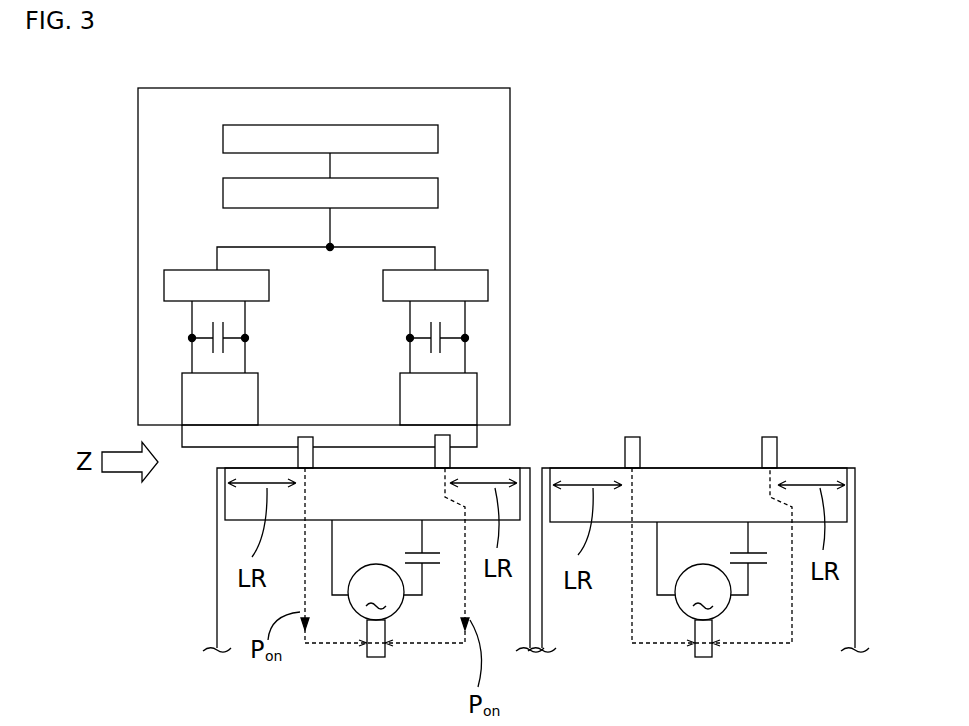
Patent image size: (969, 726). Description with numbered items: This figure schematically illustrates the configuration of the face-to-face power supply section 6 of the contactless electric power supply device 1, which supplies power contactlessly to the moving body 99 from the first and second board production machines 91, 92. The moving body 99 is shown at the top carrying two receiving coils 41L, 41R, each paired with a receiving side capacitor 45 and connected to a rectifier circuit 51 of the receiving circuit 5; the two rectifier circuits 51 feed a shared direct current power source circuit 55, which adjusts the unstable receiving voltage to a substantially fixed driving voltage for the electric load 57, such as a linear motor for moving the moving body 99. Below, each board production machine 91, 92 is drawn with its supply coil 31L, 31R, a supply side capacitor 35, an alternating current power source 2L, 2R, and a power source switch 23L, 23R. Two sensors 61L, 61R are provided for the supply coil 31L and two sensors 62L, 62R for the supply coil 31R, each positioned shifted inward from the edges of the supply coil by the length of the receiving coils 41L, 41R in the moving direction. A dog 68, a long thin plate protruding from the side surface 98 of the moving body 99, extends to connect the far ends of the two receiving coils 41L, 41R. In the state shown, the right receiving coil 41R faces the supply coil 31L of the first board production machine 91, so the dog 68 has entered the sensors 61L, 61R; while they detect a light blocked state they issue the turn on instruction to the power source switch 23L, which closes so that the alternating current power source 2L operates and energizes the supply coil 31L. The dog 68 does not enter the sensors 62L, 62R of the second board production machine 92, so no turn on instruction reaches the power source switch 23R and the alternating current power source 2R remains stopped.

The contactless electric power supply device 1 is at (563, 230).
The receiving circuit 5 is at (193, 225).
The face-to-face power supply section 6 is at (200, 460).
The moving body 99 is at (153, 123).
The electric load 57 is at (345, 153).
The direct current power source circuit 55 is at (345, 206).
The rectifier circuit 51 is at (232, 299).
The receiving side capacitor 45 is at (213, 321).
The left receiving coil 41L is at (240, 412).
The right receiving coil 41R is at (462, 412).
The side surface 98 is at (178, 426).
The dog 68 is at (205, 452).
The sensor 61L is at (297, 454).
The sensor 61R is at (450, 452).
The sensor 62L is at (640, 452).
The sensor 62R is at (777, 452).
The supply coil 31L is at (398, 512).
The supply coil 31R is at (737, 512).
The first board production machine 91 is at (548, 621).
The second board production machine 92 is at (734, 622).
The alternating current power source 2L is at (355, 613).
The alternating current power source 2R is at (683, 613).
The power source switch 23L is at (378, 657).
The power source switch 23R is at (706, 657).
The supply side capacitor 35 is at (442, 561).